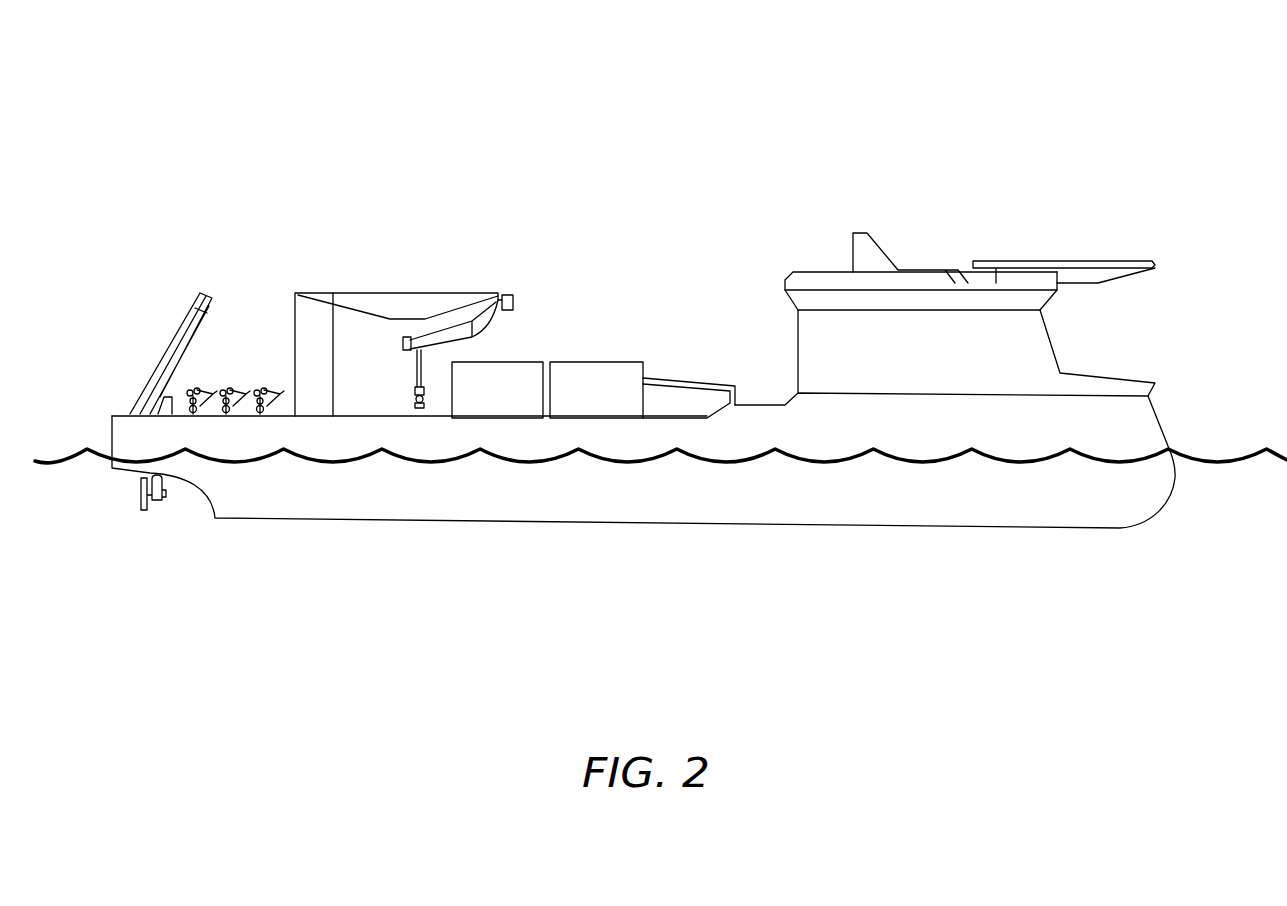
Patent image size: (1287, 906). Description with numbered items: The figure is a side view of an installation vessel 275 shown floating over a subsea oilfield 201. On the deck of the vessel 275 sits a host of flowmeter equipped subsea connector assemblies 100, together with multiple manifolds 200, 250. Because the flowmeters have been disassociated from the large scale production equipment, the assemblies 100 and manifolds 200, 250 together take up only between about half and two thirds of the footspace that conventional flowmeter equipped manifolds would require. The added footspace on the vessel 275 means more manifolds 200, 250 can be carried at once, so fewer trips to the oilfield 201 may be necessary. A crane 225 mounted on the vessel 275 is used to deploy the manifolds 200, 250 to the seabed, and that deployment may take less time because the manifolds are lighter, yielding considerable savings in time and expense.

The flowmeter equipped subsea connector assemblies 100 is at (230, 368).
The manifold 200 is at (518, 368).
The subsea oilfield 201 is at (978, 683).
The crane 225 is at (424, 296).
The manifold 250 is at (617, 368).
The installation vessel 275 is at (1028, 85).